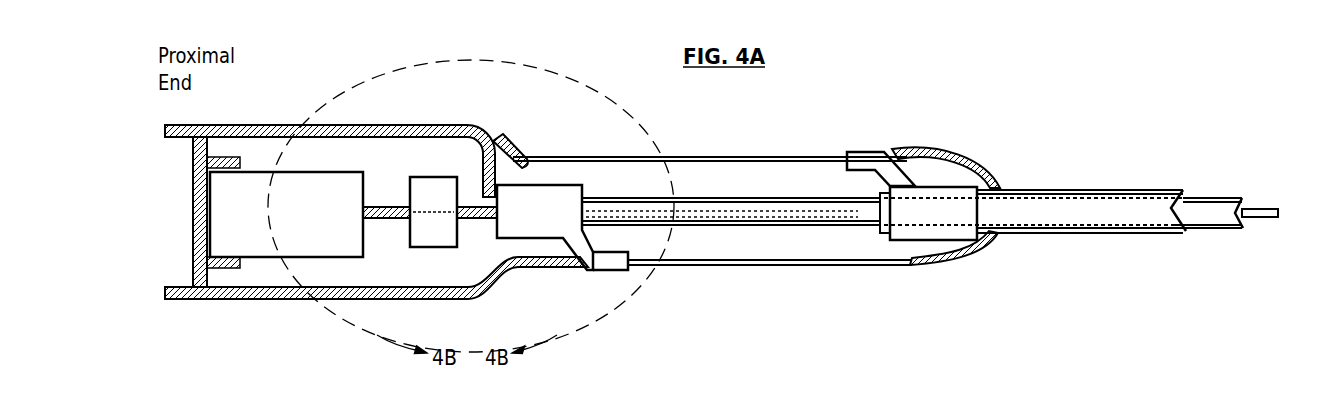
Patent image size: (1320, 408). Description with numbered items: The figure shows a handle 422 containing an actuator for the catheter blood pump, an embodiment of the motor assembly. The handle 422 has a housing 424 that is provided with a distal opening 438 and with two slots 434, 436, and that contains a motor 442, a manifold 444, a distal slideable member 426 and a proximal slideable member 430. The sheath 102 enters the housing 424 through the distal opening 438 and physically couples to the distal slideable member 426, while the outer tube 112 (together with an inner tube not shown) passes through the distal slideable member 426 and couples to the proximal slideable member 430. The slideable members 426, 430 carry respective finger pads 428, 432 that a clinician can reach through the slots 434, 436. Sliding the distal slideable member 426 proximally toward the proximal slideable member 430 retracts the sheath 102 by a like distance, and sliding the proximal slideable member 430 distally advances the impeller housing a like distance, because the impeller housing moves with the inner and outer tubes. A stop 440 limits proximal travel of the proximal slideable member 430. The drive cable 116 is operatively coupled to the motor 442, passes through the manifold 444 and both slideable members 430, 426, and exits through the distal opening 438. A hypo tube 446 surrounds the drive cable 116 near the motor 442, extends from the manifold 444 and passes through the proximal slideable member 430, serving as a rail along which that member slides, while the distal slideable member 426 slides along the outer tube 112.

The sheath 102 is at (1060, 190).
The outer tube 112 is at (718, 198).
The drive cable 116 is at (397, 207).
The handle 422 is at (985, 291).
The housing 424 is at (487, 137).
The distal slideable member 426 is at (943, 193).
The finger pad 428 is at (865, 157).
The proximal slideable member 430 is at (555, 230).
The finger pad 432 is at (598, 263).
The slot 434 is at (740, 145).
The slot 436 is at (750, 278).
The distal opening 438 is at (1003, 238).
The stop 440 is at (517, 157).
The motor 442 is at (318, 241).
The manifold 444 is at (450, 203).
The hypo tube 446 is at (477, 217).